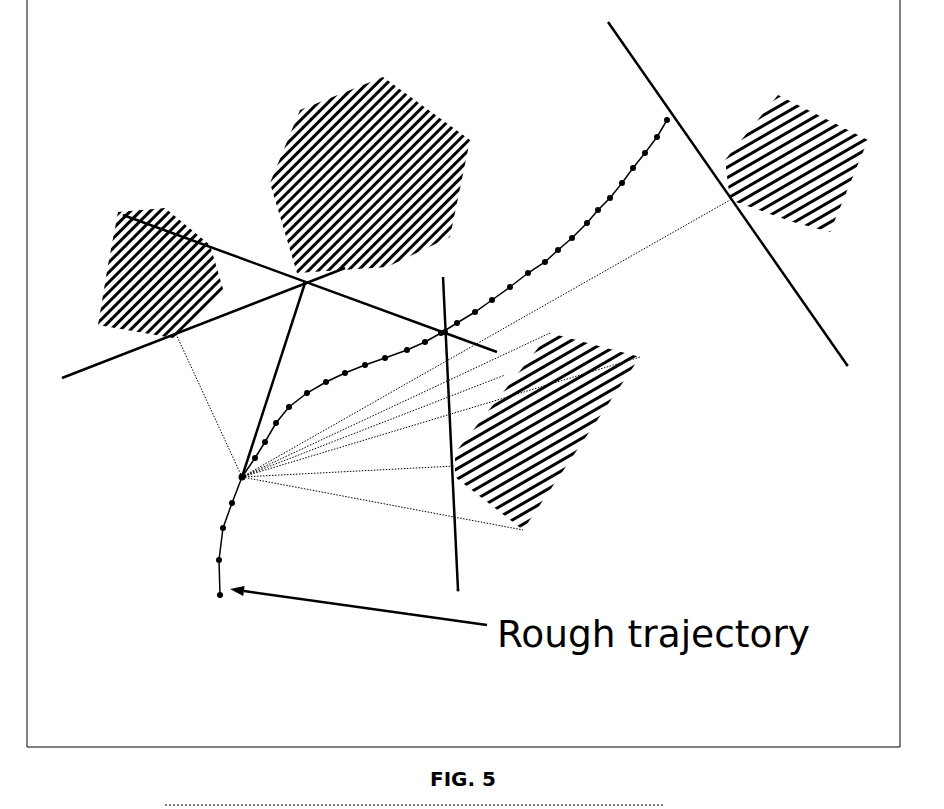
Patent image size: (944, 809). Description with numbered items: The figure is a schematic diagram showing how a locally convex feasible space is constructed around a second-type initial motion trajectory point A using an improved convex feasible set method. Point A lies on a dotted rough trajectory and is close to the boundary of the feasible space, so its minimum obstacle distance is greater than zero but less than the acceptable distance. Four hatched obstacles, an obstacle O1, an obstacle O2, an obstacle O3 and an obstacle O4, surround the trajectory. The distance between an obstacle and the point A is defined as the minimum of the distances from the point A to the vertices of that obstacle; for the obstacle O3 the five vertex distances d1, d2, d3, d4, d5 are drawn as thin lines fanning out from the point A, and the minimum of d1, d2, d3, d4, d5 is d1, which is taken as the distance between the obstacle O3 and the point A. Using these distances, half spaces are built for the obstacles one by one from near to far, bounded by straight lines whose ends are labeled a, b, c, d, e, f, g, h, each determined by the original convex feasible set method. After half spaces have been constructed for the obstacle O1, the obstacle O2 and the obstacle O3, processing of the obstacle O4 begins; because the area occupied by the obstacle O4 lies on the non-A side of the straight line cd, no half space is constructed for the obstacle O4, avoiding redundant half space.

The straight line endpoint a is at (189, 330).
The straight line endpoint b is at (312, 367).
The endpoint c of straight line cd c is at (310, 264).
The endpoint d of straight line cd d is at (475, 338).
The straight line endpoint e is at (453, 415).
The straight line endpoint f is at (469, 591).
The straight line endpoint g is at (713, 182).
The straight line endpoint h is at (841, 388).
The second-type initial motion trajectory point A is at (224, 474).
The obstacle O1 is at (147, 273).
The obstacle O2 is at (351, 175).
The obstacle O3 is at (547, 431).
The obstacle O4 is at (789, 160).
The distance to first vertex of obstacle O3 d1 is at (348, 474).
The distance to second vertex of obstacle O3 d2 is at (373, 426).
The distance to third vertex of obstacle O3 d3 is at (396, 405).
The distance to fourth vertex of obstacle O3 d4 is at (458, 412).
The distance to fifth vertex of obstacle O3 d5 is at (382, 511).